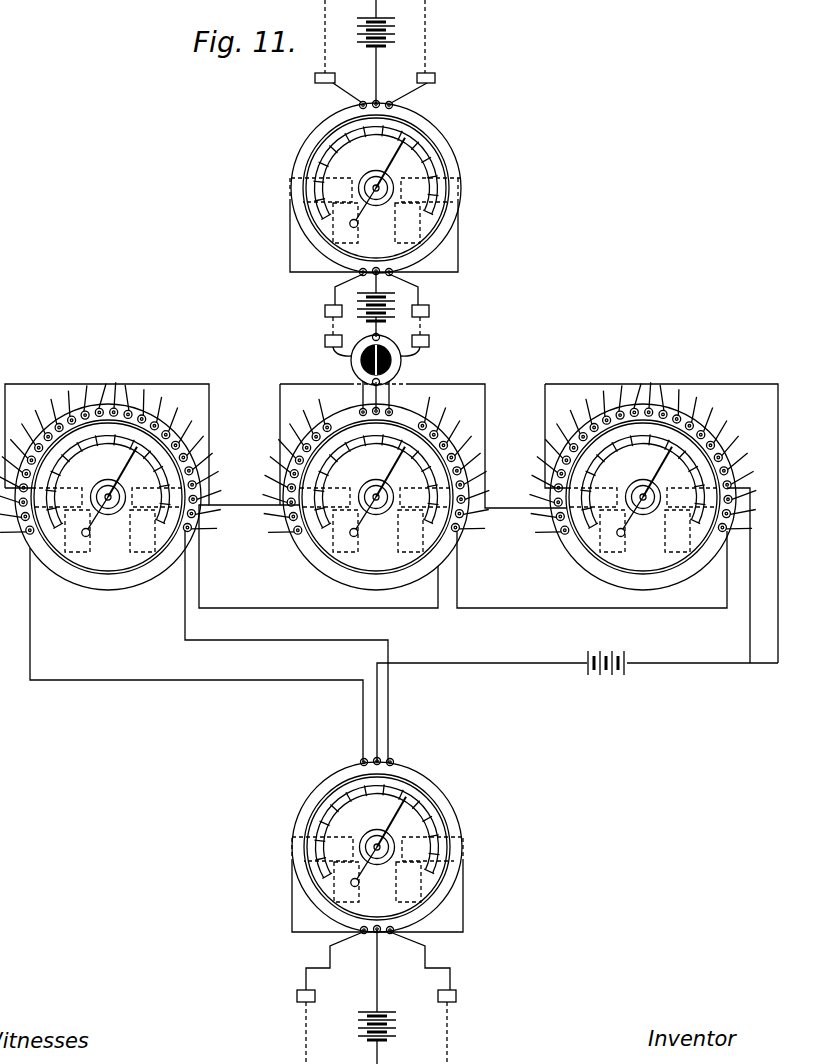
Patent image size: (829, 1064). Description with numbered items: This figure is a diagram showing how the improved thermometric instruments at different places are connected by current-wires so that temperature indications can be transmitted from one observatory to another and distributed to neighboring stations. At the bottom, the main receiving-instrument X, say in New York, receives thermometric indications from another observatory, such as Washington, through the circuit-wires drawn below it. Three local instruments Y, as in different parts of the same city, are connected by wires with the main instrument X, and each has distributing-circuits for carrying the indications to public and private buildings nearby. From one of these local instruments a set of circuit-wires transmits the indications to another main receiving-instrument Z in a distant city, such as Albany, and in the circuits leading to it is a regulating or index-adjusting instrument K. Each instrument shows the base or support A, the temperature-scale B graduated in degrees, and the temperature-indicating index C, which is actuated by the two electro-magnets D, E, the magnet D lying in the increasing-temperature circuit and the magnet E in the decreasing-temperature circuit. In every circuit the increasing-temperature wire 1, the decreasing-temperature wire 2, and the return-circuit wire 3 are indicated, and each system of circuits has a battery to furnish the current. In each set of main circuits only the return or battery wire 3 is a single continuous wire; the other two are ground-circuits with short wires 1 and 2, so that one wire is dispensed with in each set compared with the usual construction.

The increasing-temperature circuit-wire 1 is at (398, 532).
The decreasing-temperature circuit-wire 2 is at (466, 532).
The return-circuit wire 3 is at (567, 532).
The base or support A is at (375, 517).
The temperature-scale B is at (375, 501).
The temperature-indicating index C is at (377, 512).
The electro-magnet D is at (345, 552).
The electro-magnet E is at (410, 552).
The regulating or index-adjusting instrument K is at (395, 361).
The main receiving-instrument X is at (377, 842).
The local instrument Y is at (378, 477).
The main receiving-instrument Z is at (376, 187).